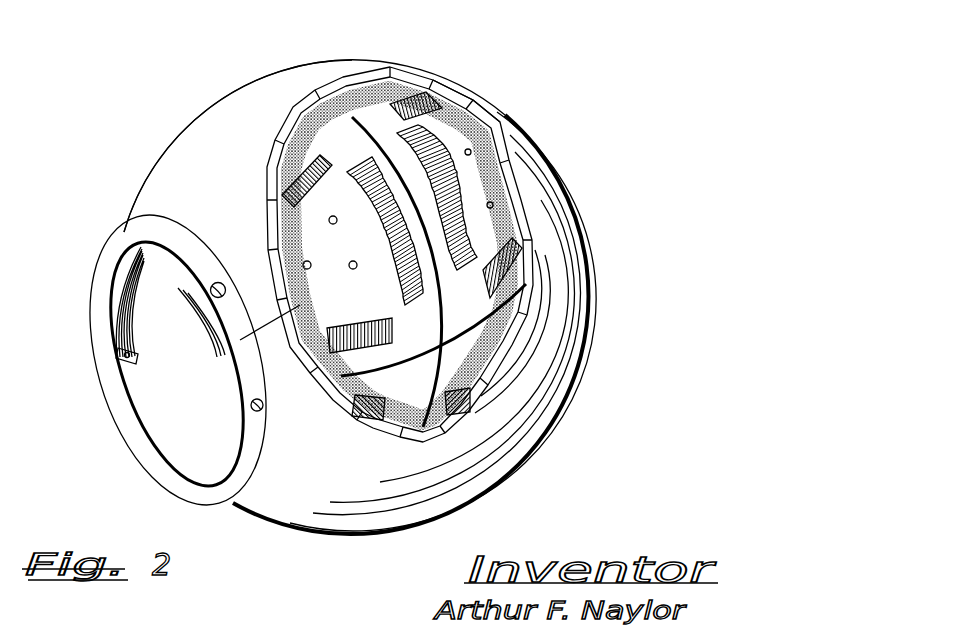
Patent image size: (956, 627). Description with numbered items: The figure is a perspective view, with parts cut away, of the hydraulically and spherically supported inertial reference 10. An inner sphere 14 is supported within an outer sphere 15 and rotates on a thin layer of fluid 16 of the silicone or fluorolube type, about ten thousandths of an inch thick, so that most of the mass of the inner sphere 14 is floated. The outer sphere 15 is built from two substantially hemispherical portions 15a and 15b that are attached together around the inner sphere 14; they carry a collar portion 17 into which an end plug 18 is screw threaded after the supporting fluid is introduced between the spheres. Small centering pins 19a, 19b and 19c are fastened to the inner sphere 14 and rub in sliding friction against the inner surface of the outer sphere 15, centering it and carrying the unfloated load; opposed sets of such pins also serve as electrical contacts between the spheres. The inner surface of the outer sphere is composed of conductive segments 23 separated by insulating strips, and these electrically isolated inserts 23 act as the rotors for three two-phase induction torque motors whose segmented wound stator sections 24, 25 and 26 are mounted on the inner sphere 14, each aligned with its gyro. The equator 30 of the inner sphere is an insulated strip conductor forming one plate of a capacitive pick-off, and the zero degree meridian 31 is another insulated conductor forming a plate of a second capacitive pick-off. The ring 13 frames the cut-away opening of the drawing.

The inertial reference 10 is at (535, 83).
The ring of the opening 13 is at (507, 153).
The inner sphere 14 is at (323, 120).
The outer sphere 15 is at (238, 95).
The portion of the outer sphere 15a is at (558, 202).
The portion of the outer sphere 15b is at (545, 177).
The fluid 16 is at (457, 110).
The collar portion 17 is at (122, 233).
The end plug 18 is at (97, 330).
The centering pin 19a is at (329, 220).
The centering pin 19b is at (349, 264).
The centering pin 19c is at (303, 265).
The conductive segments 23 is at (460, 412).
The wound stator section 24 is at (320, 160).
The wound stator section 25 is at (367, 163).
The wound stator section 26 is at (353, 340).
The equator of the inner sphere 30 is at (478, 335).
The zero degree meridian of the inner sphere 31 is at (404, 100).